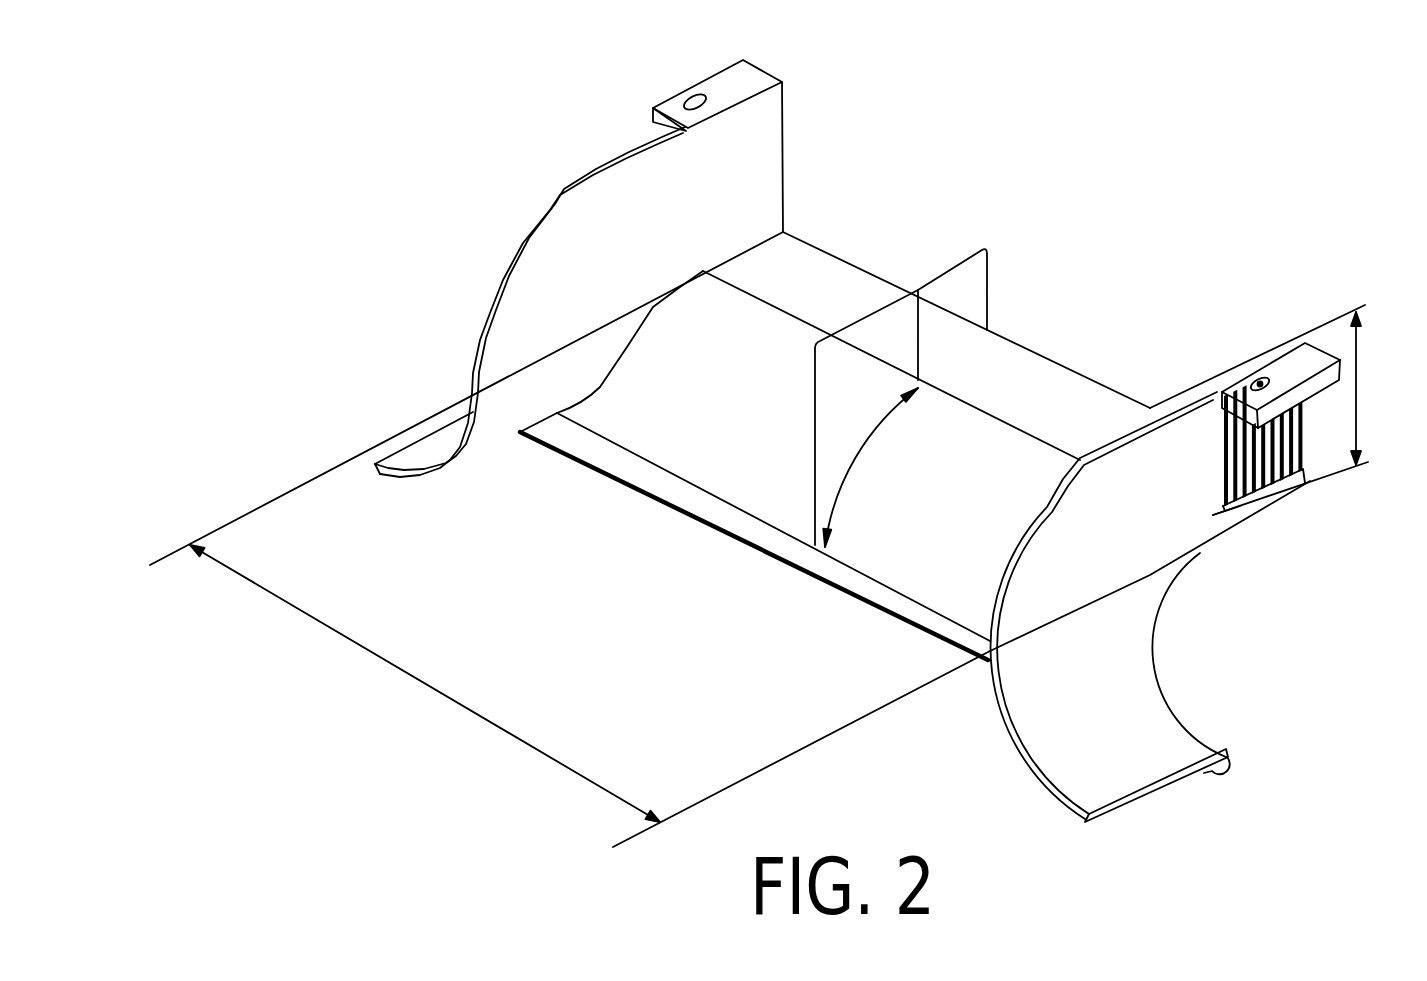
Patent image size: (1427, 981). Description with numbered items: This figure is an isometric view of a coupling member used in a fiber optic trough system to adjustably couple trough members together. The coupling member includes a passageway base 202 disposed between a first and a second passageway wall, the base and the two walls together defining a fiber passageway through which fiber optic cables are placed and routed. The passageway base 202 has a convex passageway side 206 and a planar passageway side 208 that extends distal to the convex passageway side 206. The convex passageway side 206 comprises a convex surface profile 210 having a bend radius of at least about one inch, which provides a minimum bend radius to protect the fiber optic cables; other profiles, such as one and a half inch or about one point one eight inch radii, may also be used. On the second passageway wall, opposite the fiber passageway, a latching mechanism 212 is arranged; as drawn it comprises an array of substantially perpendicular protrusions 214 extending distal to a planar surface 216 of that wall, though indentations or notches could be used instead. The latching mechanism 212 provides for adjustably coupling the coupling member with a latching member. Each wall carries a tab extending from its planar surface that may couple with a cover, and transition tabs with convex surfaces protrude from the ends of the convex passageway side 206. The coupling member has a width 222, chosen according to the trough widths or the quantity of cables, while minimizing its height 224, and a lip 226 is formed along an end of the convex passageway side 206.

The passageway base 202 is at (783, 457).
The convex passageway side 206 is at (863, 317).
The planar passageway side 208 is at (947, 265).
The convex surface profile 210 is at (865, 455).
The latching mechanism 212 is at (792, 113).
The protrusions 214 is at (1270, 497).
The planar surface 216 is at (1213, 515).
The width 222 is at (590, 696).
The height 224 is at (1292, 413).
The lip 226 is at (647, 500).